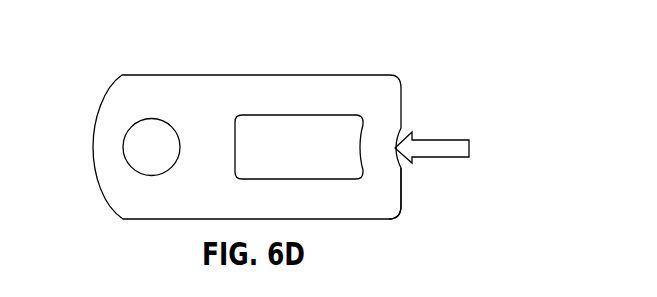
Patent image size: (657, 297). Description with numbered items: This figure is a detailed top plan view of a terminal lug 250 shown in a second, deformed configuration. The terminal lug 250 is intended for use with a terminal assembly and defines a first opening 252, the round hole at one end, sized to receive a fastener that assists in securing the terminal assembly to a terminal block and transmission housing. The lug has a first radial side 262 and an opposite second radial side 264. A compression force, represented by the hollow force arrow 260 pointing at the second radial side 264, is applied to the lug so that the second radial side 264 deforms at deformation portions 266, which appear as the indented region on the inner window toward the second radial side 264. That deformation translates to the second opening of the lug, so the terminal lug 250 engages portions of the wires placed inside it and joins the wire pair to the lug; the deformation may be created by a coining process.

The terminal lug 250 is at (193, 69).
The first opening 252 is at (122, 148).
The first radial side 262 is at (161, 95).
The deformation portions 266 is at (369, 134).
The force arrow 260 is at (440, 138).
The second radial side 264 is at (402, 192).